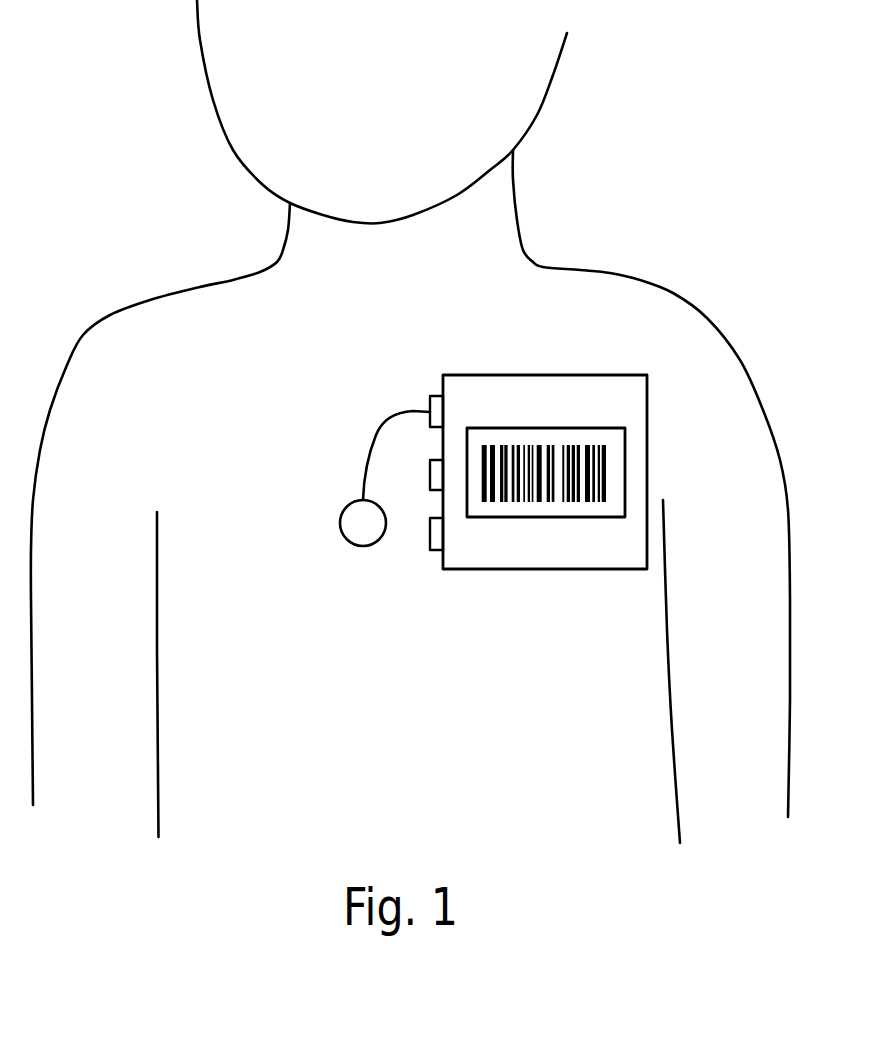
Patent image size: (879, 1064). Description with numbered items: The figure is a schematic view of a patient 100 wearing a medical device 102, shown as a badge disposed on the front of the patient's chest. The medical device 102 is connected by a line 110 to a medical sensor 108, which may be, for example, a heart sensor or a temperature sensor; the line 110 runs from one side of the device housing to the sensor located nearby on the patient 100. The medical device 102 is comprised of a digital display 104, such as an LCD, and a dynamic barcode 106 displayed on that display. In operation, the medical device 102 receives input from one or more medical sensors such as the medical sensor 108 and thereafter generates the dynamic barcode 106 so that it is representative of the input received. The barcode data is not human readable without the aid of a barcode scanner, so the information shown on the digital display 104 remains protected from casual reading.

The patient 100 is at (610, 273).
The medical device 102 is at (523, 375).
The digital display 104 is at (625, 463).
The dynamic barcode 106 is at (540, 502).
The medical sensor 108 is at (353, 546).
The line 110 is at (378, 423).